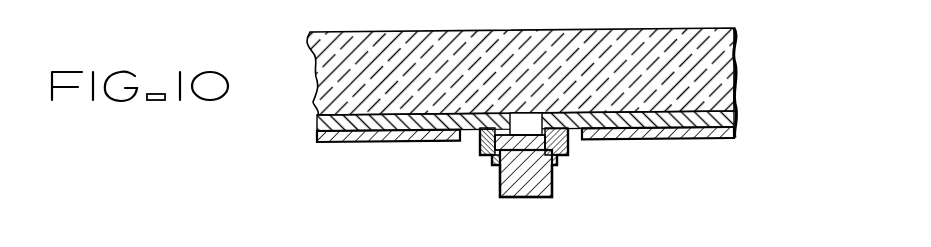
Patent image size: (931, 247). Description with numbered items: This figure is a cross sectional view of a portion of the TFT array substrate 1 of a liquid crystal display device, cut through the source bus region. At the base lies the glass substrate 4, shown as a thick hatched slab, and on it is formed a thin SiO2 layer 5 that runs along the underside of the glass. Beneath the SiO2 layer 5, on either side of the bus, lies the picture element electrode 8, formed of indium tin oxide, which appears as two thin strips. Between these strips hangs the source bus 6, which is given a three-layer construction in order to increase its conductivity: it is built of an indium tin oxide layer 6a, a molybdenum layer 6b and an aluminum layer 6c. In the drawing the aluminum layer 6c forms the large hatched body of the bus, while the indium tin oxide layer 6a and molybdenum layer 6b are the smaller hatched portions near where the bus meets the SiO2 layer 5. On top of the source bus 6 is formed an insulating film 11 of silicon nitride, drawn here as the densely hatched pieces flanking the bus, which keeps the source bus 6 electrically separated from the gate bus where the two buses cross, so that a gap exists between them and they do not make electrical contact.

The TFT array substrate 1 is at (735, 64).
The glass substrate 4 is at (314, 50).
The SiO2 layer 5 is at (313, 121).
The picture element electrode 8 is at (341, 143).
The source bus 6 is at (536, 152).
The indium tin oxide layer 6a is at (521, 130).
The molybdenum layer 6b is at (578, 129).
The aluminum layer 6c is at (508, 198).
The insulating film 11 is at (492, 160).